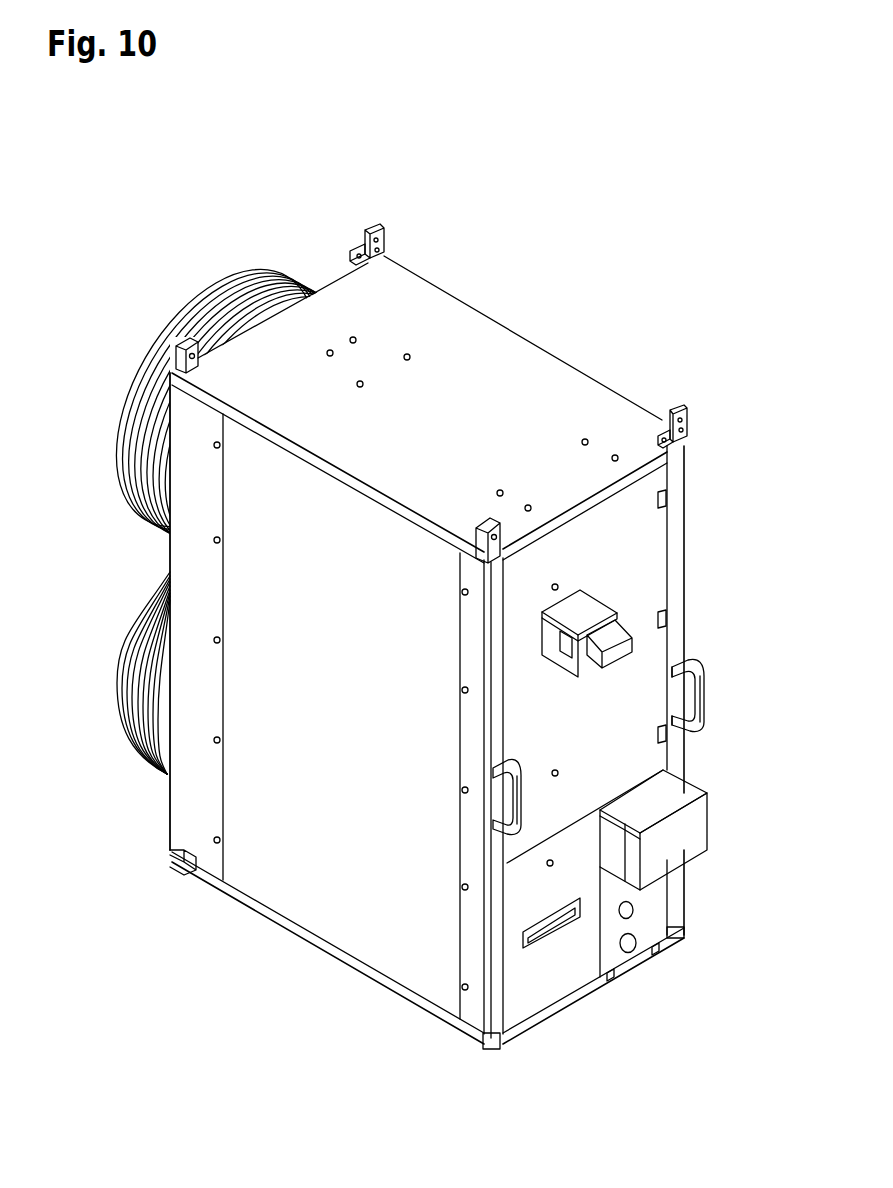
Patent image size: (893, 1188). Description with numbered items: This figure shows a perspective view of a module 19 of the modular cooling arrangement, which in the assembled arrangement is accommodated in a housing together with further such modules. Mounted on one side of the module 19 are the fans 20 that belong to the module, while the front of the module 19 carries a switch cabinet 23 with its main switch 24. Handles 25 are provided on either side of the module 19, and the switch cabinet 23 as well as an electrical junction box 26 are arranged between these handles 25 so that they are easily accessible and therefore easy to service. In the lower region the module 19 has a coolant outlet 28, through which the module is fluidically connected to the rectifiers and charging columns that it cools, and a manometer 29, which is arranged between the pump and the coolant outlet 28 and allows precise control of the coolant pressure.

The module 19 is at (192, 198).
The fan 20 is at (197, 313).
The switch cabinet 23 is at (640, 538).
The main switch 24 is at (632, 650).
The handles 25 is at (700, 704).
The electrical junction box 26 is at (698, 838).
The coolant outlet 28 is at (634, 909).
The manometer 29 is at (628, 952).